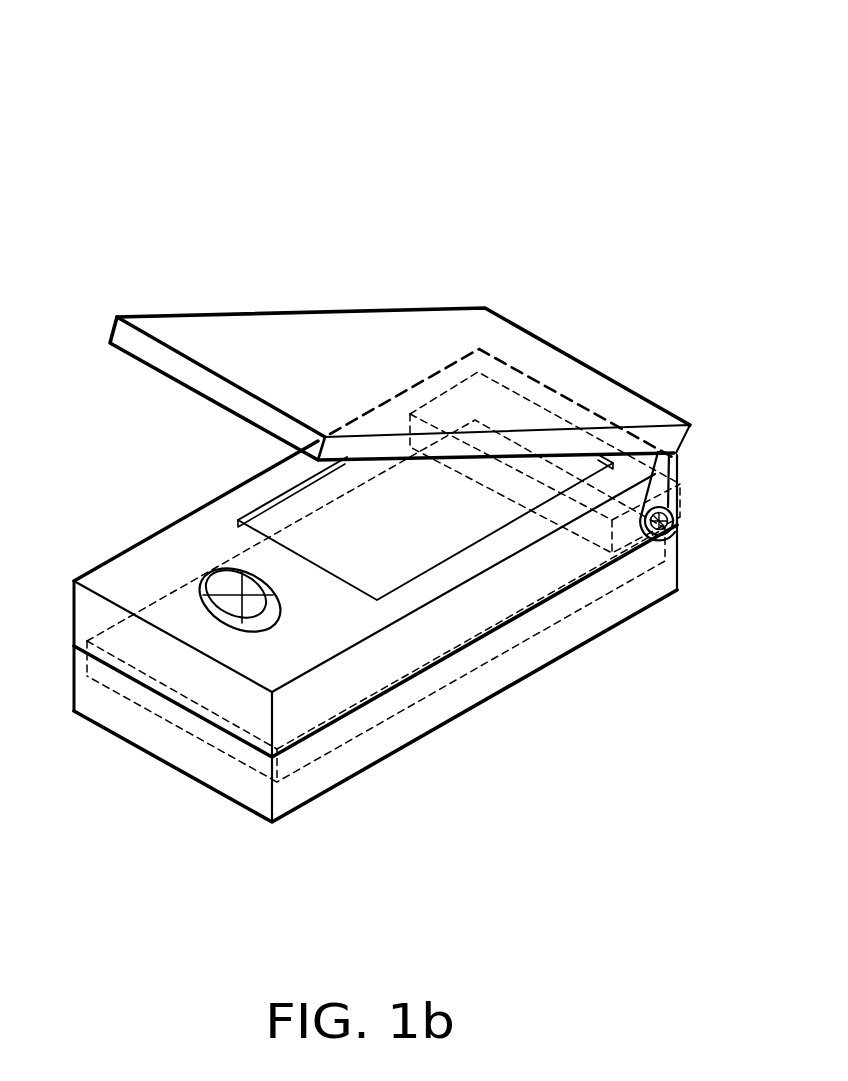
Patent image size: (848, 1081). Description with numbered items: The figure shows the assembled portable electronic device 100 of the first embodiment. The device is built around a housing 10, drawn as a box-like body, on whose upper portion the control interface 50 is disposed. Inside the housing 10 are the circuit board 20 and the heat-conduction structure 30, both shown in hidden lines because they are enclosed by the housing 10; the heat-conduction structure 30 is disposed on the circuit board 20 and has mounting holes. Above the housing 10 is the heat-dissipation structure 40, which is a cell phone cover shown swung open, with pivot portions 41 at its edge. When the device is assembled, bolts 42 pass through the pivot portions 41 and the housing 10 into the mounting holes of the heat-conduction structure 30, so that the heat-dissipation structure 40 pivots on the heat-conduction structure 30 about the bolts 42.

The portable electronic device 100 is at (83, 43).
The housing 10 is at (341, 762).
The circuit board 20 is at (516, 634).
The heat-conduction structure 30 is at (524, 410).
The heat-dissipation structure 40 is at (330, 328).
The pivot portions 41 is at (678, 476).
The bolts 42 is at (681, 534).
The control interface 50 is at (283, 522).